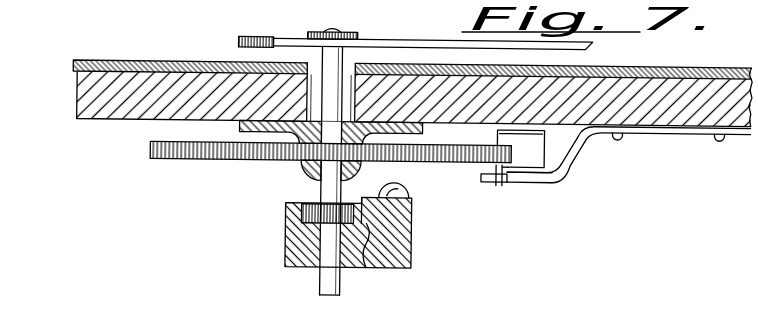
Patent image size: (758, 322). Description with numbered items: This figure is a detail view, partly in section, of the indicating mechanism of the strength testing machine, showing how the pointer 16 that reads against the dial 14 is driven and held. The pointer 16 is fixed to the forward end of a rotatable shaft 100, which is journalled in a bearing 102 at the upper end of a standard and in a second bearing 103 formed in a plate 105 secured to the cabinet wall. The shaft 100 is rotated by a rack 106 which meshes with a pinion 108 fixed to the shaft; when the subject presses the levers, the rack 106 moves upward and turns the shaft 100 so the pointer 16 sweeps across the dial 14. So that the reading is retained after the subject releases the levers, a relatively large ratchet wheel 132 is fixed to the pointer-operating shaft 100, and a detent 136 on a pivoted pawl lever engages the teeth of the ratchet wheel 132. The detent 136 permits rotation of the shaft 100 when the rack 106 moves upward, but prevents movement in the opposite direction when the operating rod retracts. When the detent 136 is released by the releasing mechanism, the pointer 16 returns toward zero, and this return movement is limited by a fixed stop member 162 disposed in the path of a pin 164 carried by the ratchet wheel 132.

The dial 14 is at (689, 62).
The pointer 16 is at (395, 36).
The rotatable shaft 100 is at (327, 53).
The bearing 102 is at (297, 247).
The bearing 103 is at (320, 132).
The plate 105 is at (239, 124).
The rack 106 is at (363, 210).
The pinion 108 is at (303, 210).
The ratchet wheel 132 is at (172, 158).
The detent 136 is at (538, 154).
The fixed stop member 162 is at (523, 178).
The pin 164 is at (500, 181).